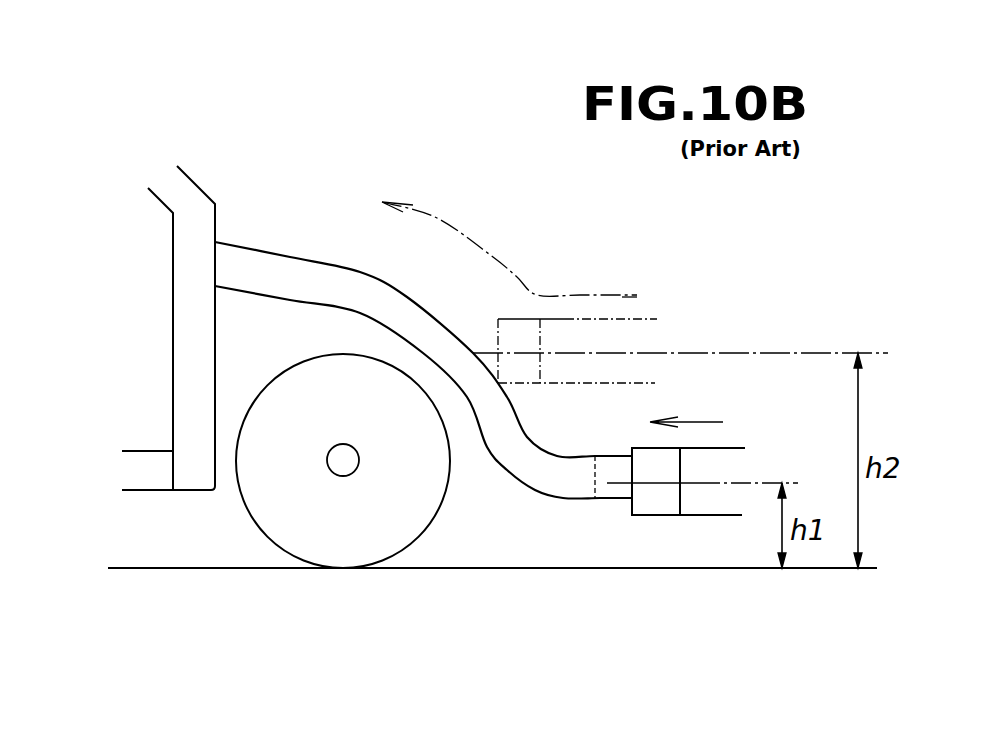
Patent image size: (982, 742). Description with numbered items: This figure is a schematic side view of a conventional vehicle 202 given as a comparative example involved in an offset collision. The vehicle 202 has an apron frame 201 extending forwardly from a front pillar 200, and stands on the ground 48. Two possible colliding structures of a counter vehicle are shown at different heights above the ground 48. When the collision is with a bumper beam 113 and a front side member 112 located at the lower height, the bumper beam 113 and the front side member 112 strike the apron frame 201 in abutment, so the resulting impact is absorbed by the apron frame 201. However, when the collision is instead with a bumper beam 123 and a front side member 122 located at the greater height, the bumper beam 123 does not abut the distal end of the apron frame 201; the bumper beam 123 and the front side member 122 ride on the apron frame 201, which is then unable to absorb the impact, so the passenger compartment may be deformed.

The vehicle 202 is at (232, 177).
The apron frame 201 is at (300, 257).
The front pillar 200 is at (173, 315).
The ground 48 is at (137, 567).
The bumper beam 123 is at (517, 317).
The front side member 122 is at (623, 317).
The bumper beam 113 is at (658, 515).
The front side member 112 is at (715, 515).